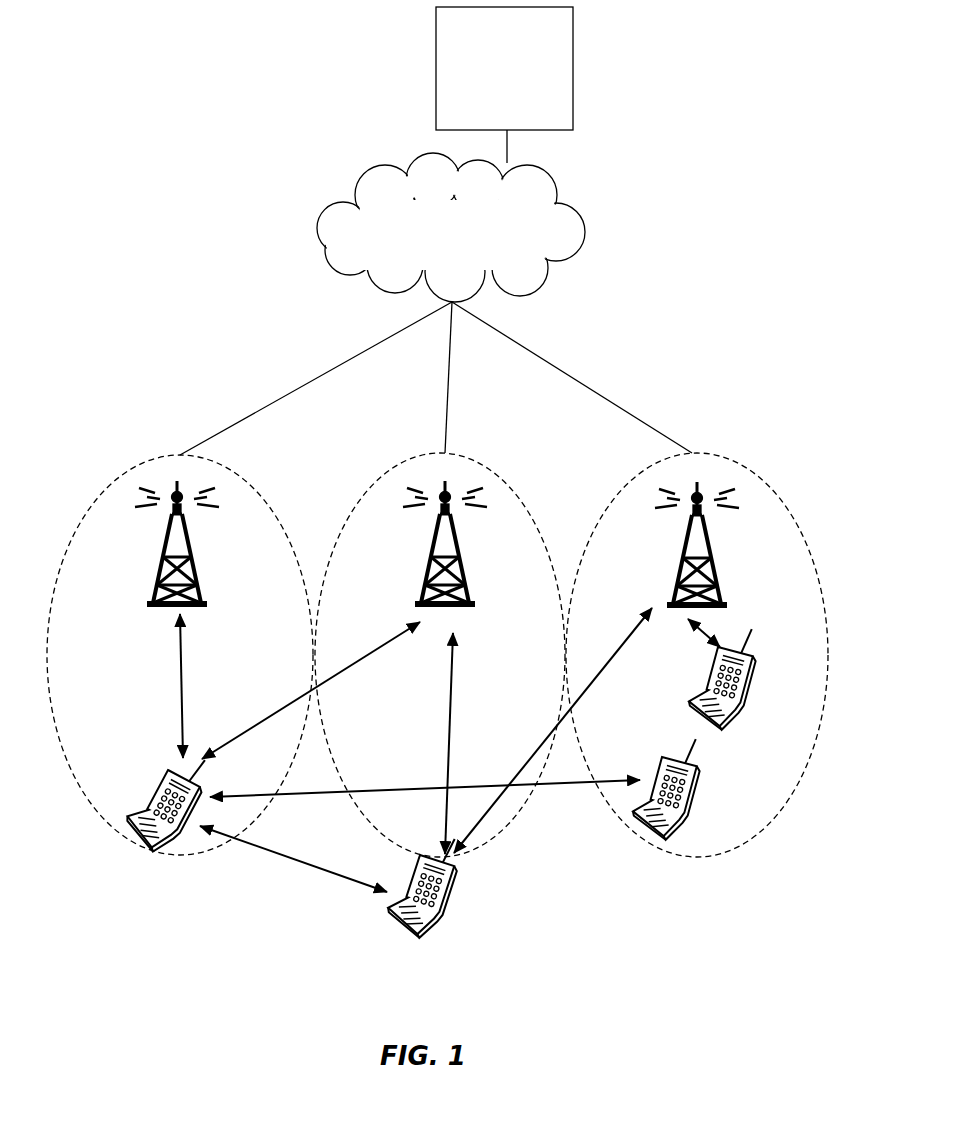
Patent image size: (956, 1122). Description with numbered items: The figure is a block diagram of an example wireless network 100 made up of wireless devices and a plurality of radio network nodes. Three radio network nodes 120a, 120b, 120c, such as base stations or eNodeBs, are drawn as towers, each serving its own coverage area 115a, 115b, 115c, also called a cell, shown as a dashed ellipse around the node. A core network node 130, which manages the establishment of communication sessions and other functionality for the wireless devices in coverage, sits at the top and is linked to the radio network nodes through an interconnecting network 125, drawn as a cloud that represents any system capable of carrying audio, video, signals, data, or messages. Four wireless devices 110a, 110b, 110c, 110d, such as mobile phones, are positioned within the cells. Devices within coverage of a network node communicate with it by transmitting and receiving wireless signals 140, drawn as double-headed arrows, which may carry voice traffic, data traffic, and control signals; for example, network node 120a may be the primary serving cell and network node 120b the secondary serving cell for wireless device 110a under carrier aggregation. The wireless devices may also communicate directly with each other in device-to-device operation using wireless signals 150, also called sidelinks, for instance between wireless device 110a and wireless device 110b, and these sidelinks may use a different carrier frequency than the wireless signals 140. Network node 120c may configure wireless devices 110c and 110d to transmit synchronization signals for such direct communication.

The wireless network 100 is at (168, 93).
The core network node 130 is at (490, 121).
The interconnecting network 125 is at (432, 274).
The coverage area 115a is at (180, 655).
The coverage area 115b is at (440, 655).
The coverage area 115c is at (697, 655).
The network node 120a is at (167, 569).
The network node 120b is at (427, 569).
The network node 120c is at (672, 580).
The wireless device 110a is at (140, 814).
The wireless device 110b is at (442, 903).
The wireless device 110c is at (690, 800).
The wireless device 110d is at (750, 690).
The wireless signals 140 is at (431, 731).
The wireless signal 150 is at (420, 836).